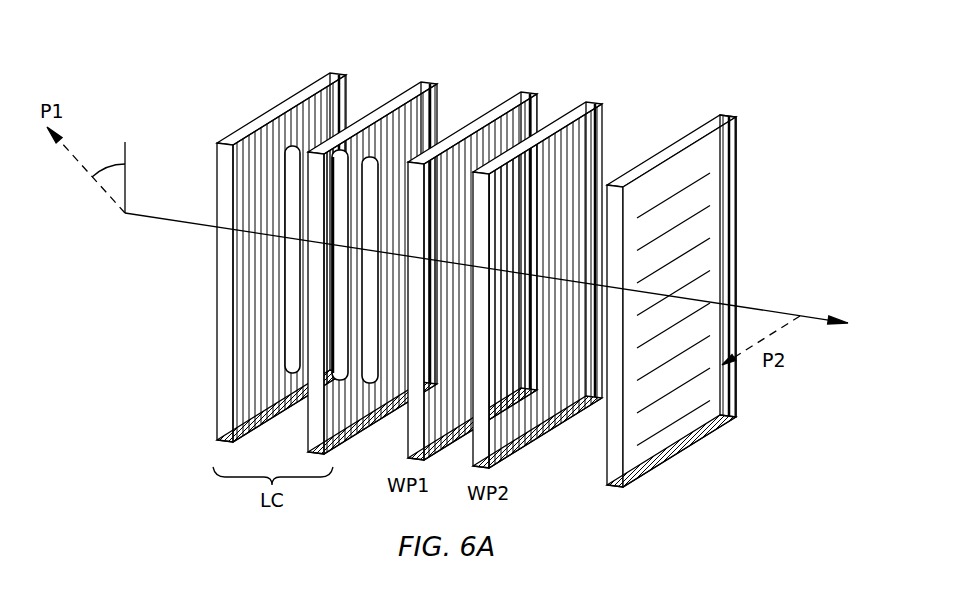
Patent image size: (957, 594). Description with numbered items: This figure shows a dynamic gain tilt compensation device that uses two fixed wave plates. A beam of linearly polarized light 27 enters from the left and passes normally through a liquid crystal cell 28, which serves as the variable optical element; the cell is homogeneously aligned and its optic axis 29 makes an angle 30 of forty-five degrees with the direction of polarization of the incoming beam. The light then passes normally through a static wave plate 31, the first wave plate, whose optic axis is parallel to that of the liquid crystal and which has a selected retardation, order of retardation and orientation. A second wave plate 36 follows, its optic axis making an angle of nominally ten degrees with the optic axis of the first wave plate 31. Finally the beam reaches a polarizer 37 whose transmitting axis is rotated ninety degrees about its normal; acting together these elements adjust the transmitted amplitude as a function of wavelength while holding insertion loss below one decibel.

The beam of linearly polarized light 27 is at (82, 179).
The liquid crystal cell 28 is at (438, 61).
The optic axis 29 is at (225, 260).
The angle 30 is at (139, 155).
The static wave plate 31 is at (501, 245).
The second wave plate 36 is at (566, 255).
The polarizer 37 is at (671, 287).